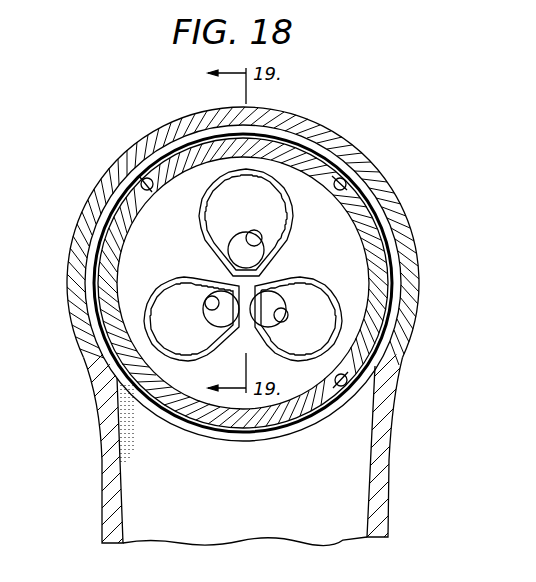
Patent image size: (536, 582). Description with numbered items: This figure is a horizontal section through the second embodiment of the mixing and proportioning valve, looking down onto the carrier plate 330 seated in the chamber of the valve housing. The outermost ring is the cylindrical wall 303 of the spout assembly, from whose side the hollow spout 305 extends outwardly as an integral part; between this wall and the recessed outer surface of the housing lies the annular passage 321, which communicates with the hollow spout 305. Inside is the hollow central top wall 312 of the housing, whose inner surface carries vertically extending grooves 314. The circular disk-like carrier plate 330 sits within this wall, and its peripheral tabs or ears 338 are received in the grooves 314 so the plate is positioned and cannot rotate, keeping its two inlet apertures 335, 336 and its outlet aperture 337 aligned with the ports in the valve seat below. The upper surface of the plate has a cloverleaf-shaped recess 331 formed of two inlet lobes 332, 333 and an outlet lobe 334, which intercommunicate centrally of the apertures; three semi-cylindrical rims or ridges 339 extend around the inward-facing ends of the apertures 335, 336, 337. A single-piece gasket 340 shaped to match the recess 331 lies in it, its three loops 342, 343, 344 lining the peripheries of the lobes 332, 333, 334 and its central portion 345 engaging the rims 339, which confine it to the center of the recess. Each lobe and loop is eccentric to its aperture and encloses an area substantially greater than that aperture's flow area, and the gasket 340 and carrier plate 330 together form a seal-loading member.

The cylindrical wall 303 is at (88, 375).
The hollow spout 305 is at (118, 515).
The hollow central top wall 312 is at (160, 243).
The vertically extending grooves 314 is at (155, 186).
The annular passage 321 is at (173, 328).
The carrier plate 330 is at (118, 212).
The recesses 331 is at (258, 208).
The inlet lobe 332 is at (317, 335).
The inlet lobe 333 is at (93, 352).
The outlet lobe 334 is at (252, 198).
The inlet aperture 335 is at (283, 315).
The inlet aperture 336 is at (176, 303).
The outlet aperture 337 is at (260, 237).
The tabs or ears 338 is at (143, 190).
The semi-cylindrical rims or ridges 339 is at (203, 309).
The gasket 340 is at (222, 177).
The gasket loop 342 is at (340, 302).
The gasket loop 343 is at (160, 300).
The gasket loop 344 is at (207, 197).
The central portion 345 is at (238, 335).